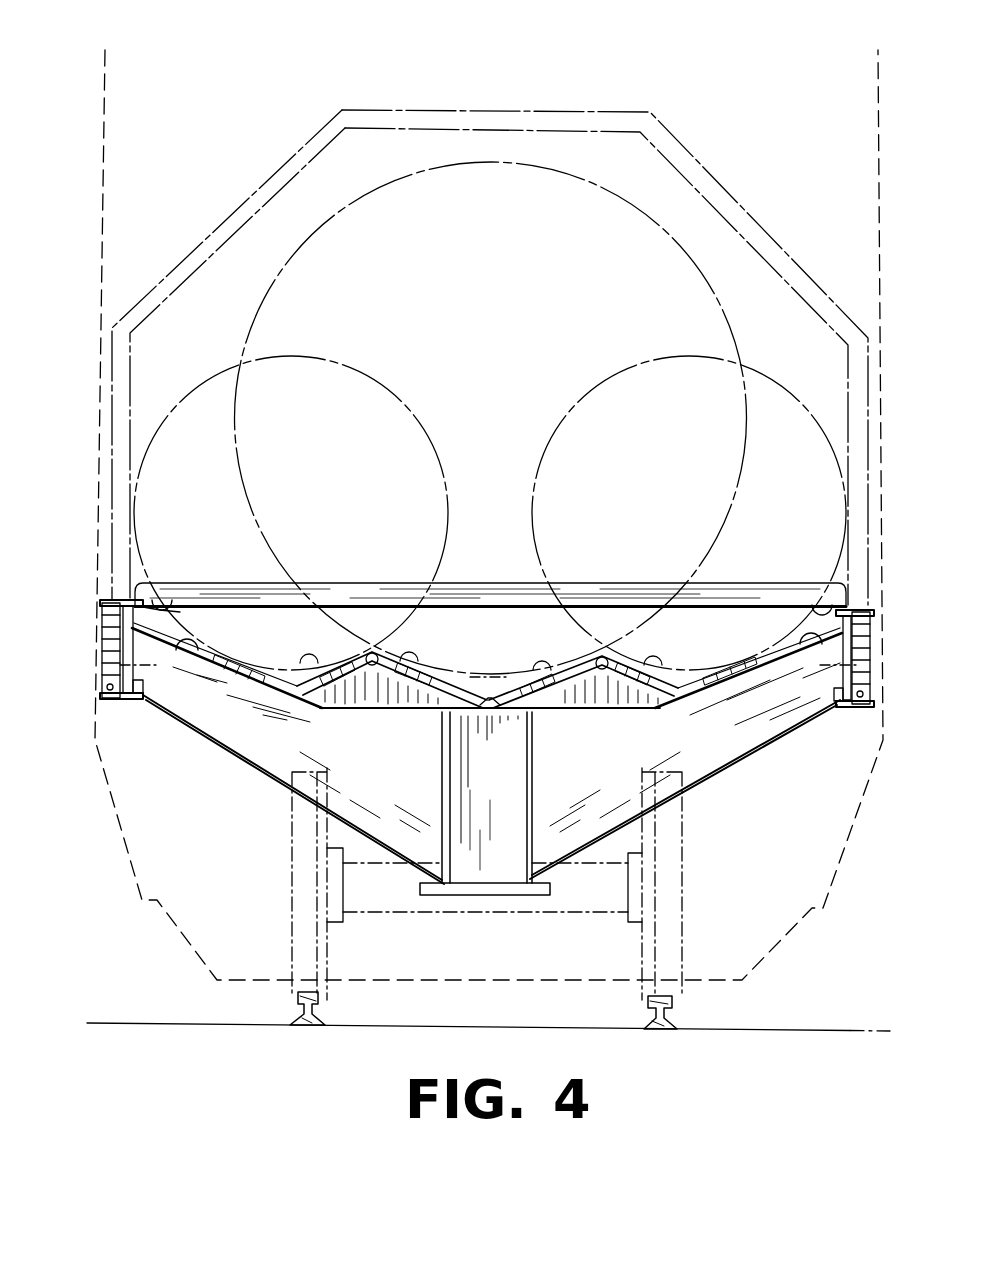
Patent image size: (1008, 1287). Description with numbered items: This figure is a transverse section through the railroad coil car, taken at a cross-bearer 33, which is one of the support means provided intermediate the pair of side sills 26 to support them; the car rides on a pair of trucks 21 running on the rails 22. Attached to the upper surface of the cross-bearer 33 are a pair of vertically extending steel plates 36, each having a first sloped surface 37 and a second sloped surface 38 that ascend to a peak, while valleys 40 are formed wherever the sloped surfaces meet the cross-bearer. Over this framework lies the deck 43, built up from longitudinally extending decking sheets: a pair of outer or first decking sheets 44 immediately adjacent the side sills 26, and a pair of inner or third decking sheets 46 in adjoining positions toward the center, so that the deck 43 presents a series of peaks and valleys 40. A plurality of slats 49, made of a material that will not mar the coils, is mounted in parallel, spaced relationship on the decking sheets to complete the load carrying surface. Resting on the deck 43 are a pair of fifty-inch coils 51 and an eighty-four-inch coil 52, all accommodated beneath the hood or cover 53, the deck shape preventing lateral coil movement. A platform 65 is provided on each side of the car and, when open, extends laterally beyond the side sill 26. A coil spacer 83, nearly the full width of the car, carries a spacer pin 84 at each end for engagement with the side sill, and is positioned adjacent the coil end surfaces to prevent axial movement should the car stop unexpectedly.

The truck 21 is at (292, 898).
The rail 22 is at (298, 1016).
The side sill 26 is at (125, 700).
The cross-bearer 33 is at (707, 778).
The vertically extending steel plate 36 is at (355, 700).
The first sloped surface 37 is at (302, 700).
The second sloped surface 38 is at (415, 690).
The valley 40 is at (285, 685).
The deck 43 is at (173, 628).
The first decking sheet 44 is at (180, 648).
The third decking sheet 46 is at (476, 700).
The slat 49 is at (320, 630).
The 50-inch coil 51 is at (555, 430).
The 84-inch coil 52 is at (522, 163).
The hood or cover 53 is at (693, 158).
The platform 65 is at (103, 645).
The coil spacer 83 is at (448, 590).
The spacer pin 84 is at (165, 600).